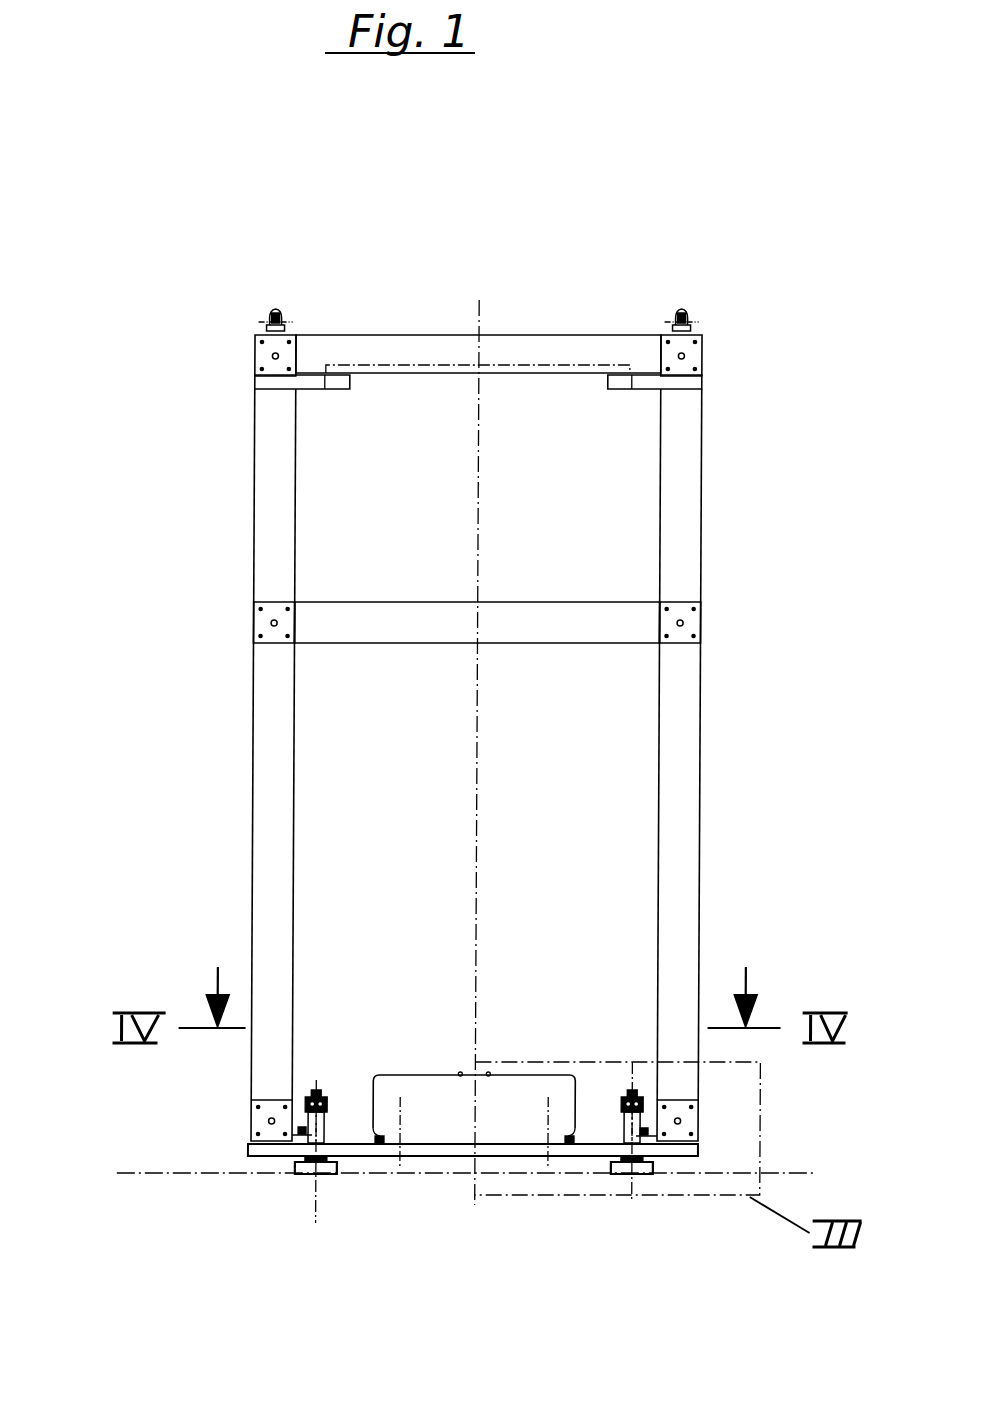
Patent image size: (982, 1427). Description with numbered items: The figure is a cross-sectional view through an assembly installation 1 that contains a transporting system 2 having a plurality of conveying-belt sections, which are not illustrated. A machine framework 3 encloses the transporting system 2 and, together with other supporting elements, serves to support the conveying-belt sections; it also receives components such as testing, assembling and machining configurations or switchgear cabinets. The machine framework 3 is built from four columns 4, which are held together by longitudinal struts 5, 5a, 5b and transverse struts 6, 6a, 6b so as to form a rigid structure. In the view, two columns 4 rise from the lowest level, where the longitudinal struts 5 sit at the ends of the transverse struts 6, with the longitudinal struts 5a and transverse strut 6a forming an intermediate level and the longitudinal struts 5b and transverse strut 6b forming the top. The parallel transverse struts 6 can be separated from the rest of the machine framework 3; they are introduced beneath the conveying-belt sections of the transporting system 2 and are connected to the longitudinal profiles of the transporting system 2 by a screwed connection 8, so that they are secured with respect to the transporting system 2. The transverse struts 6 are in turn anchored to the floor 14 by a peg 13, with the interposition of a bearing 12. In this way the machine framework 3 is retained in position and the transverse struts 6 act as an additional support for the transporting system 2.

The assembly installation 1 is at (745, 667).
The transporting system 2 is at (423, 1107).
The machine framework 3 is at (612, 790).
The column 4 is at (671, 848).
The longitudinal strut 5 is at (262, 1118).
The longitudinal strut 5a is at (259, 625).
The longitudinal strut 5b is at (258, 360).
The transverse strut 6 is at (345, 1142).
The transverse strut 6a is at (490, 614).
The transverse strut 6b is at (498, 348).
The screwed connection 8 is at (399, 1158).
The bearing 12 is at (310, 1175).
The peg 13 is at (628, 1105).
The floor 14 is at (173, 1175).